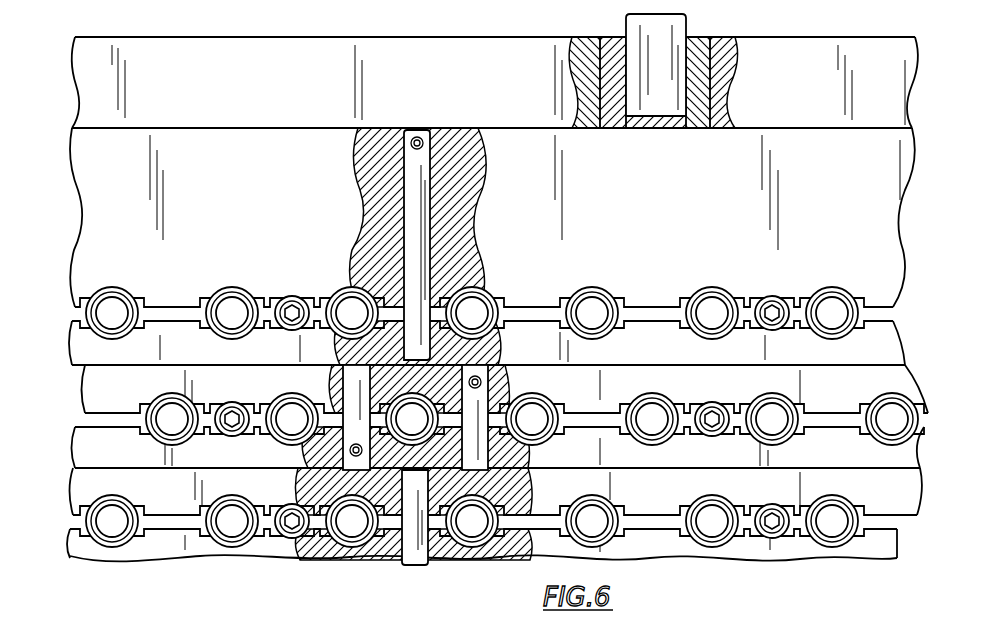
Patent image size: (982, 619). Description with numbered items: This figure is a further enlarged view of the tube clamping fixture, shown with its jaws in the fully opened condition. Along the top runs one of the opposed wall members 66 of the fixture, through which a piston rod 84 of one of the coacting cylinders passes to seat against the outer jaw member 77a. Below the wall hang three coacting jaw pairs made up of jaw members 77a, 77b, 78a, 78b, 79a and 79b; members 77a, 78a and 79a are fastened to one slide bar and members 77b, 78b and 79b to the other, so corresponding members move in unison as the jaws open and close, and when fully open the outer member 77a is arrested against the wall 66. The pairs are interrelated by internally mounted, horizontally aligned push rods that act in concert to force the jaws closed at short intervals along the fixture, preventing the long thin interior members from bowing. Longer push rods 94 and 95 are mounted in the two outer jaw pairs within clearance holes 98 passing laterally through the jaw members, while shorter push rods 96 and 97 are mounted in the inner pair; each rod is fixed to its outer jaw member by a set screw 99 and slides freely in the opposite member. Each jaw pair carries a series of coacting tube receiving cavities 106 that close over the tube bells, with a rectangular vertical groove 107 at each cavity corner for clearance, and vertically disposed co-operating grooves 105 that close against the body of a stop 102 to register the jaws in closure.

The wall member 66 is at (790, 50).
The piston rod 84 is at (672, 40).
The outer jaw member 77a is at (892, 258).
The jaw member 77b is at (885, 353).
The jaw member 78a is at (900, 392).
The jaw member 78b is at (918, 478).
The jaw member 79a is at (905, 512).
The outer jaw member 79b is at (897, 548).
The push rod 94 is at (430, 212).
The push rod 95 is at (430, 565).
The push rod 96 is at (488, 375).
The push rod 97 is at (343, 455).
The clearance hole 98 is at (372, 268).
The set screw 99 is at (432, 128).
The stop 102 is at (790, 300).
The co-operating groove 105 is at (772, 296).
The tube receiving cavity 106 is at (232, 285).
The rectangular vertical groove 107 is at (200, 295).